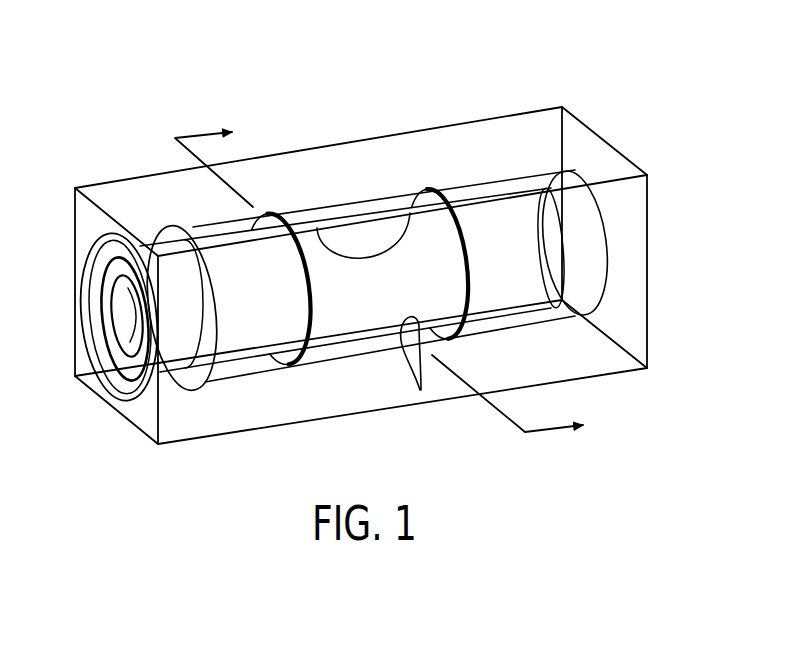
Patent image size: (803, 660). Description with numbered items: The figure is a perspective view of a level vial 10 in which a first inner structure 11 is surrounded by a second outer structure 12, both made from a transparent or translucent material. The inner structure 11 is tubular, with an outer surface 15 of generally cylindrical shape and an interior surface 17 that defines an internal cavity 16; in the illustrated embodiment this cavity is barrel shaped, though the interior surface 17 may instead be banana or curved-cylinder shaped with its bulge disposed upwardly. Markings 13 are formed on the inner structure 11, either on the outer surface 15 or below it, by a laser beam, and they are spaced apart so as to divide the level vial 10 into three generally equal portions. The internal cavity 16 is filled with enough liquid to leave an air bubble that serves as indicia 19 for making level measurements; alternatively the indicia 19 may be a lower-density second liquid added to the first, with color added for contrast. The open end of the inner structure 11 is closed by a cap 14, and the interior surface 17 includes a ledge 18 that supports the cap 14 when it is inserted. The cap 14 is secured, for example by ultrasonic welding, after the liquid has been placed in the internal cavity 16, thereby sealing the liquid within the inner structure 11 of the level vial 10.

The level vial 10 is at (170, 87).
The first inner structure 11 is at (333, 213).
The second outer structure 12 is at (478, 143).
The markings 13 is at (447, 192).
The cap 14 is at (134, 372).
The outer surface 15 is at (193, 227).
The internal cavity 16 is at (375, 298).
The interior surface 17 is at (420, 388).
The ledge 18 is at (193, 380).
The indicia 19 is at (365, 233).